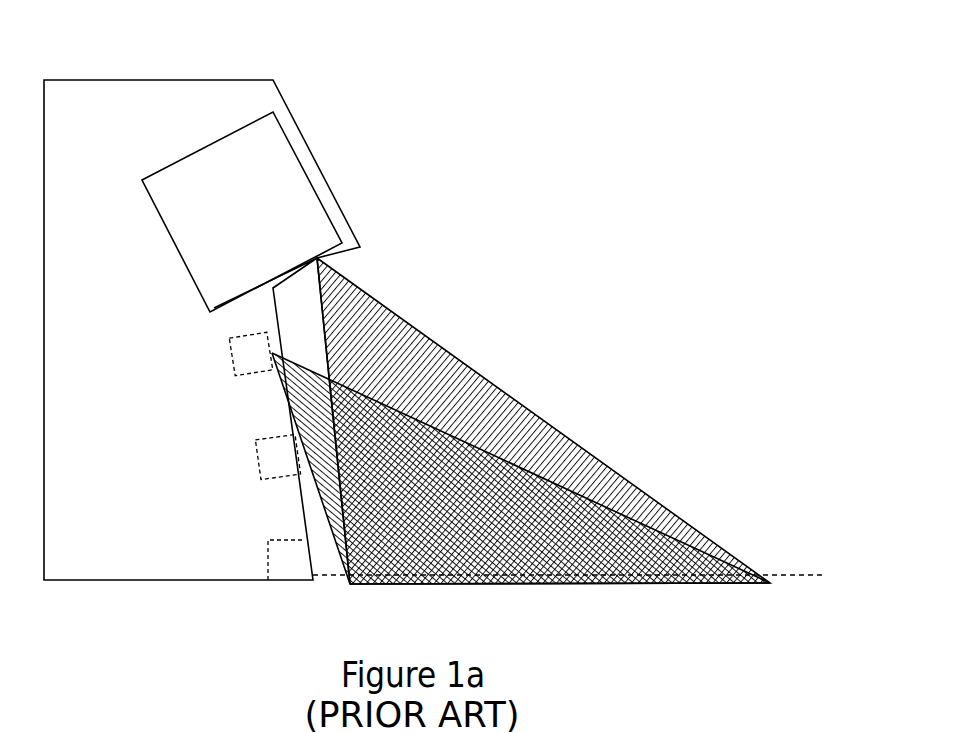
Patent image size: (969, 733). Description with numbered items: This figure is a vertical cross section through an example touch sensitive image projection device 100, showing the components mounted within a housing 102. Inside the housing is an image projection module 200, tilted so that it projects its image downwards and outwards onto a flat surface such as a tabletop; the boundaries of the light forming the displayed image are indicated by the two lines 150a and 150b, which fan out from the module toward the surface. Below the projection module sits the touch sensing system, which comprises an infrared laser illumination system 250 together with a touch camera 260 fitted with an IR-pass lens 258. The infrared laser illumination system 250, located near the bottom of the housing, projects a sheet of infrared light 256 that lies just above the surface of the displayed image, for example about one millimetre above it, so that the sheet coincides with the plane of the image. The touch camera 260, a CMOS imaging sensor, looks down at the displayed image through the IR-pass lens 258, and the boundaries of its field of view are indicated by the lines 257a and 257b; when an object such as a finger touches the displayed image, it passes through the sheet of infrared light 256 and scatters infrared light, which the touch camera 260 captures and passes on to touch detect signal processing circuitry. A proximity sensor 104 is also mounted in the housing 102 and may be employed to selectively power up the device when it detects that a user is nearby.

The touch sensitive image projection device 100 is at (122, 636).
The housing 102 is at (252, 80).
The proximity sensor 104 is at (265, 462).
The image projection module 200 is at (308, 208).
The boundary line of displayed image light 150a is at (388, 320).
The boundary line of displayed image light 150b is at (345, 455).
The infrared laser illumination system 250 is at (292, 568).
The sheet of infrared light 256 is at (460, 575).
The boundary line of touch camera field of view 257a is at (338, 573).
The boundary line of touch camera field of view 257b is at (493, 455).
The IR-pass lens 258 is at (250, 350).
The touch camera 260 is at (216, 347).